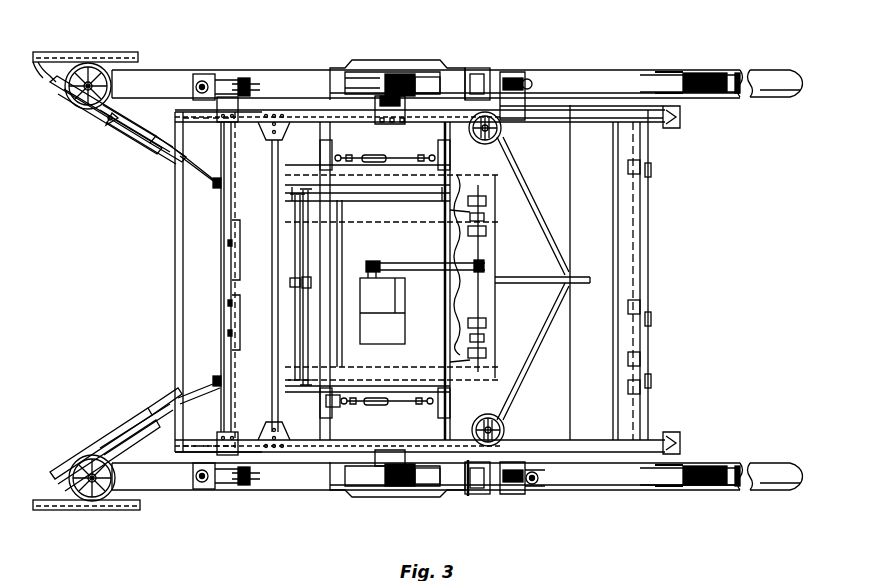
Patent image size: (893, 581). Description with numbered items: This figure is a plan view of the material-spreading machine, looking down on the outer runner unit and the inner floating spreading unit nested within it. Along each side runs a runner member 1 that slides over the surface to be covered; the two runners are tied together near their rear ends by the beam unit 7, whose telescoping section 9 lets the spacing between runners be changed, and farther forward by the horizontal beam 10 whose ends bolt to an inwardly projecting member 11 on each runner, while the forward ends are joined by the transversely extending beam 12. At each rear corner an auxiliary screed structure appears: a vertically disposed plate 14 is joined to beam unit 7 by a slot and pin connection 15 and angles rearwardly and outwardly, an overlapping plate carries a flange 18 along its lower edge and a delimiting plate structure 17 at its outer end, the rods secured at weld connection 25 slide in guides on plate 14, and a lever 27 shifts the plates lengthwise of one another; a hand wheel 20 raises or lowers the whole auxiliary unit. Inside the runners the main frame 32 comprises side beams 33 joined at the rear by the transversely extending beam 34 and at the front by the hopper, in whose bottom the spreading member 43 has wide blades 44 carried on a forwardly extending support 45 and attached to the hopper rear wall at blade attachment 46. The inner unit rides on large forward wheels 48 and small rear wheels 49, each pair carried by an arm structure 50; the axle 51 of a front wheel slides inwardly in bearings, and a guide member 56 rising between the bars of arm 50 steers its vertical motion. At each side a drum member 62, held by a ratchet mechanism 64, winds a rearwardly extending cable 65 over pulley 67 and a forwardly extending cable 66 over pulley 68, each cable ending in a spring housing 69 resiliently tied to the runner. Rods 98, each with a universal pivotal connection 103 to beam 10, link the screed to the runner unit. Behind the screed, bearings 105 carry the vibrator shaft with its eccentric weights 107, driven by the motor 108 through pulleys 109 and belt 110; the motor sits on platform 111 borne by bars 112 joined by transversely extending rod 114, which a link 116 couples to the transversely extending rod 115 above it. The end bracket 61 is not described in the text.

The runner members 1 is at (283, 82).
The beam unit 7 is at (219, 216).
The telescoping section 9 is at (228, 272).
The beam 10 is at (327, 328).
The inwardly projecting member 11 is at (338, 146).
The transversely extending beam 12 is at (650, 210).
The vertically disposed plate 14 is at (156, 150).
The slot and pin connection 15 is at (214, 190).
The delimiting plate structure 17 is at (120, 52).
The flange 18 is at (108, 116).
The hand wheel 20 is at (88, 63).
The weld connection 25 is at (42, 72).
The lever 27 is at (112, 126).
The main frame 32 is at (174, 194).
The side beams 33 is at (290, 115).
The transversely extending beam 34 is at (187, 282).
The spreading member 43 is at (526, 386).
The wide blades 44 is at (528, 198).
The forwardly extending support 45 is at (524, 283).
The blade attachment 46 is at (500, 133).
The large forward wheels 48 is at (668, 82).
The small rear wheels 49 is at (380, 486).
The arm structure 50 is at (490, 494).
The axle 51 is at (645, 186).
The guide member 56 is at (478, 70).
The end bracket 61 is at (680, 117).
The drum member 62 is at (396, 72).
The ratchet mechanism 64 is at (402, 118).
The rearwardly extending cable 65 is at (290, 478).
The forwardly extending cable 66 is at (510, 78).
The pulley 67 is at (240, 78).
The pulley 68 is at (512, 492).
The spring housing 69 is at (206, 74).
The rods 98 is at (405, 406).
The universal pivotal connection 103 is at (327, 405).
The bearings 105 is at (486, 230).
The weights 107 is at (458, 214).
The motor 108 is at (396, 295).
The pulleys 109 is at (374, 262).
The belt 110 is at (418, 264).
The platform 111 is at (378, 358).
The bars 112 is at (295, 364).
The transversely extending rod 114 is at (296, 262).
The transversely extending rod 115 is at (305, 310).
The link 116 is at (290, 285).